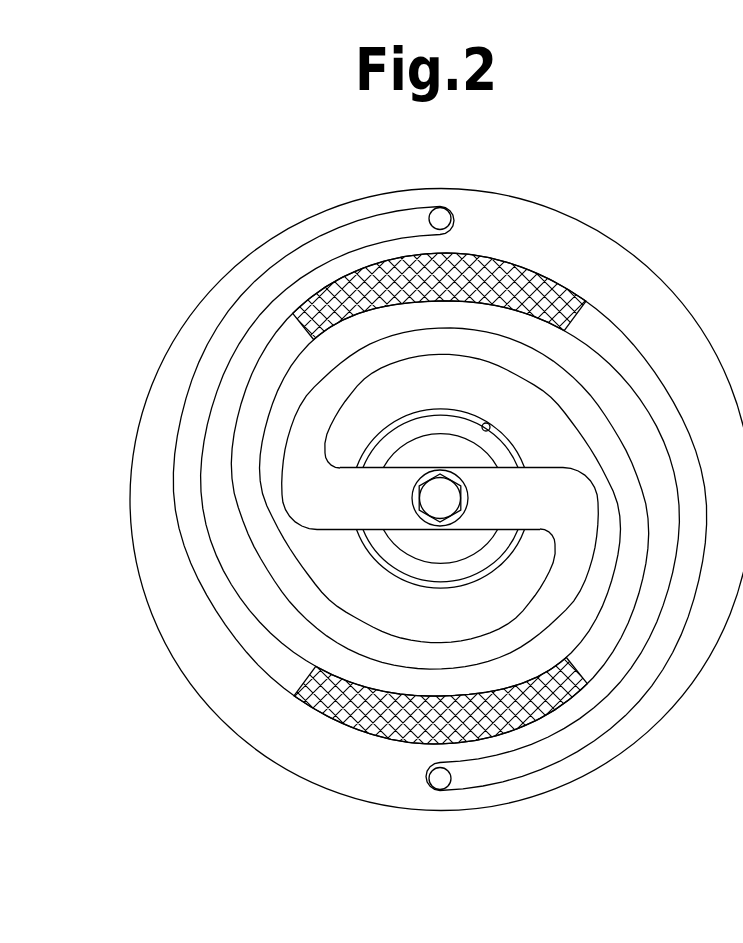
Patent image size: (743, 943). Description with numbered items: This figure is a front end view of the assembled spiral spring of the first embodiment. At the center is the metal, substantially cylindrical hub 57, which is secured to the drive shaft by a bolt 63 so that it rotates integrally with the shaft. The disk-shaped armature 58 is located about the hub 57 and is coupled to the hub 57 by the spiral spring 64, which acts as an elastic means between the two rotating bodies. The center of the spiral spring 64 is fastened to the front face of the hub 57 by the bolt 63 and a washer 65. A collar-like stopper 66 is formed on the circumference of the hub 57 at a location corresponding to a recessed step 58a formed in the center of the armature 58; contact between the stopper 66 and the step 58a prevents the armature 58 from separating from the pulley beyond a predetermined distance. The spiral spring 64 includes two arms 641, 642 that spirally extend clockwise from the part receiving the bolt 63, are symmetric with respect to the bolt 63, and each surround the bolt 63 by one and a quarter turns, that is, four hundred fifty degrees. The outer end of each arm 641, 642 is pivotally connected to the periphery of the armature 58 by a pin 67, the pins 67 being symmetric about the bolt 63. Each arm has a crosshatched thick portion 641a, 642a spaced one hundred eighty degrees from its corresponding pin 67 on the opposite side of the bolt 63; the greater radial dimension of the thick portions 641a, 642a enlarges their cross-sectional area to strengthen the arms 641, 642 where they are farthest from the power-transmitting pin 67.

The hub 57 is at (400, 540).
The armature 58 is at (321, 788).
The recessed step 58a is at (490, 425).
The bolt 63 is at (452, 498).
The spiral spring 64 is at (442, 502).
The arm 641 is at (330, 407).
The thick portion 641a is at (404, 743).
The arm 642 is at (555, 590).
The thick portion 642a is at (505, 266).
The washer 65 is at (411, 497).
The stopper 66 is at (443, 572).
The pin 67 is at (440, 218).